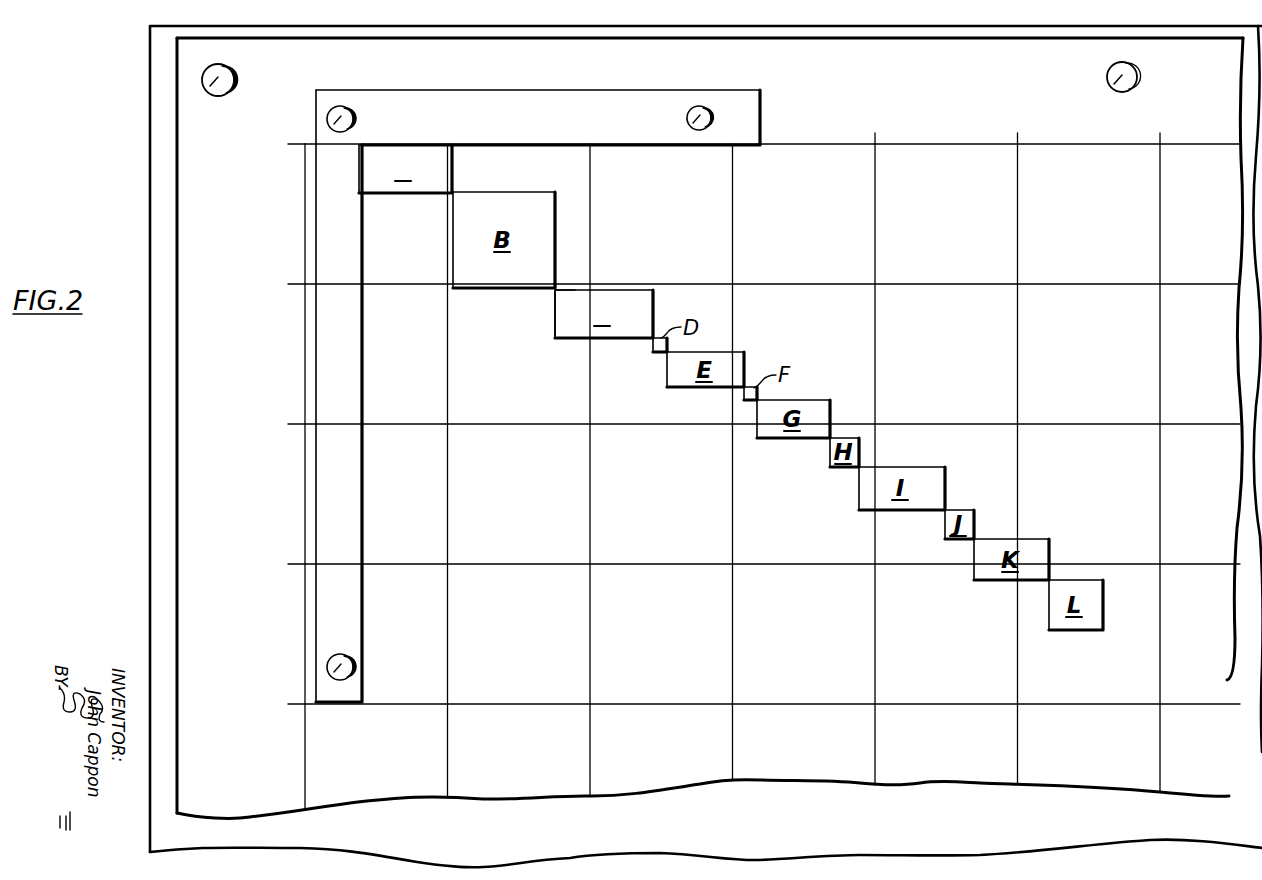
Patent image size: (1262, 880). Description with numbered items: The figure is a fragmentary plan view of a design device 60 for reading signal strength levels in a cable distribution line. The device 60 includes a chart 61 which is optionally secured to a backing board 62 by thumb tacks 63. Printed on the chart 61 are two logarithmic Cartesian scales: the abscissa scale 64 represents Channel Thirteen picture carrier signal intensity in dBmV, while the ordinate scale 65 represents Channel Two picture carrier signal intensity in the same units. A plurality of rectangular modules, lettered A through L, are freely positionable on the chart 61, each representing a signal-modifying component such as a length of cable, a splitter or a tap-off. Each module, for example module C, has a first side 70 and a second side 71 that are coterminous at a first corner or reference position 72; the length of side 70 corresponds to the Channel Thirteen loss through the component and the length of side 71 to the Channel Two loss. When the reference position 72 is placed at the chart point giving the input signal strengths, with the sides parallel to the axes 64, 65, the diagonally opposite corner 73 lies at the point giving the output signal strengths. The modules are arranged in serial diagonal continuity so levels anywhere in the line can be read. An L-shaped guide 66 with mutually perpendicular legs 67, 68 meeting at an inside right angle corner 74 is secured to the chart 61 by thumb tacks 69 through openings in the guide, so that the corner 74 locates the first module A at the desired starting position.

The device 60 is at (147, 238).
The chart 61 is at (671, 793).
The backing board 62 is at (706, 836).
The thumb tacks 63 is at (212, 96).
The abscissa scale 64 is at (908, 135).
The ordinate scale 65 is at (300, 745).
The L-shaped guide 66 is at (511, 380).
The leg of guide 67 is at (538, 117).
The leg of guide 68 is at (350, 482).
The thumb tacks 69 is at (316, 91).
The first side of module 70 is at (584, 301).
The second side of module 71 is at (552, 315).
The first corner or reference position 72 is at (560, 289).
The diagonally opposite corner 73 is at (652, 342).
The inside right angle corner 74 is at (359, 148).